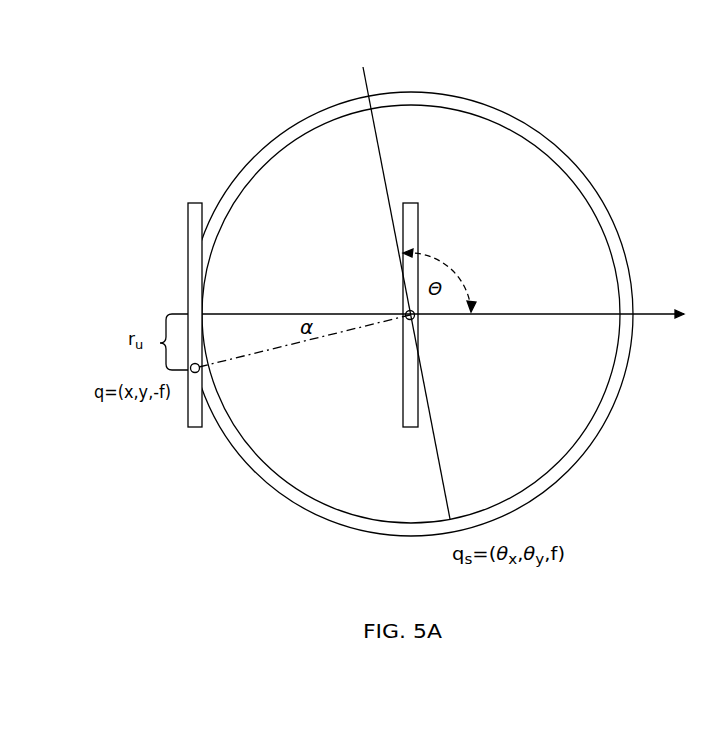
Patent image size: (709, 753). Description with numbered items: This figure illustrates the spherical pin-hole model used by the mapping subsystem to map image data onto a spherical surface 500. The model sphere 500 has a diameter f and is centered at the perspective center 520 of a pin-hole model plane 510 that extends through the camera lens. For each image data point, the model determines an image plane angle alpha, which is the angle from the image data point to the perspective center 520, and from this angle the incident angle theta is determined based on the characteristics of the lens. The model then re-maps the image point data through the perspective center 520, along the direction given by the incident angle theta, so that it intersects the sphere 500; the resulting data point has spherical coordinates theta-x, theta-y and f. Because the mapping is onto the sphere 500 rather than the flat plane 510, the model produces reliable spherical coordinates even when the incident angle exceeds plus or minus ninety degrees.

The spherical surface 500 is at (603, 213).
The pin-hole model plane 510 is at (413, 212).
The perspective center 520 is at (413, 325).